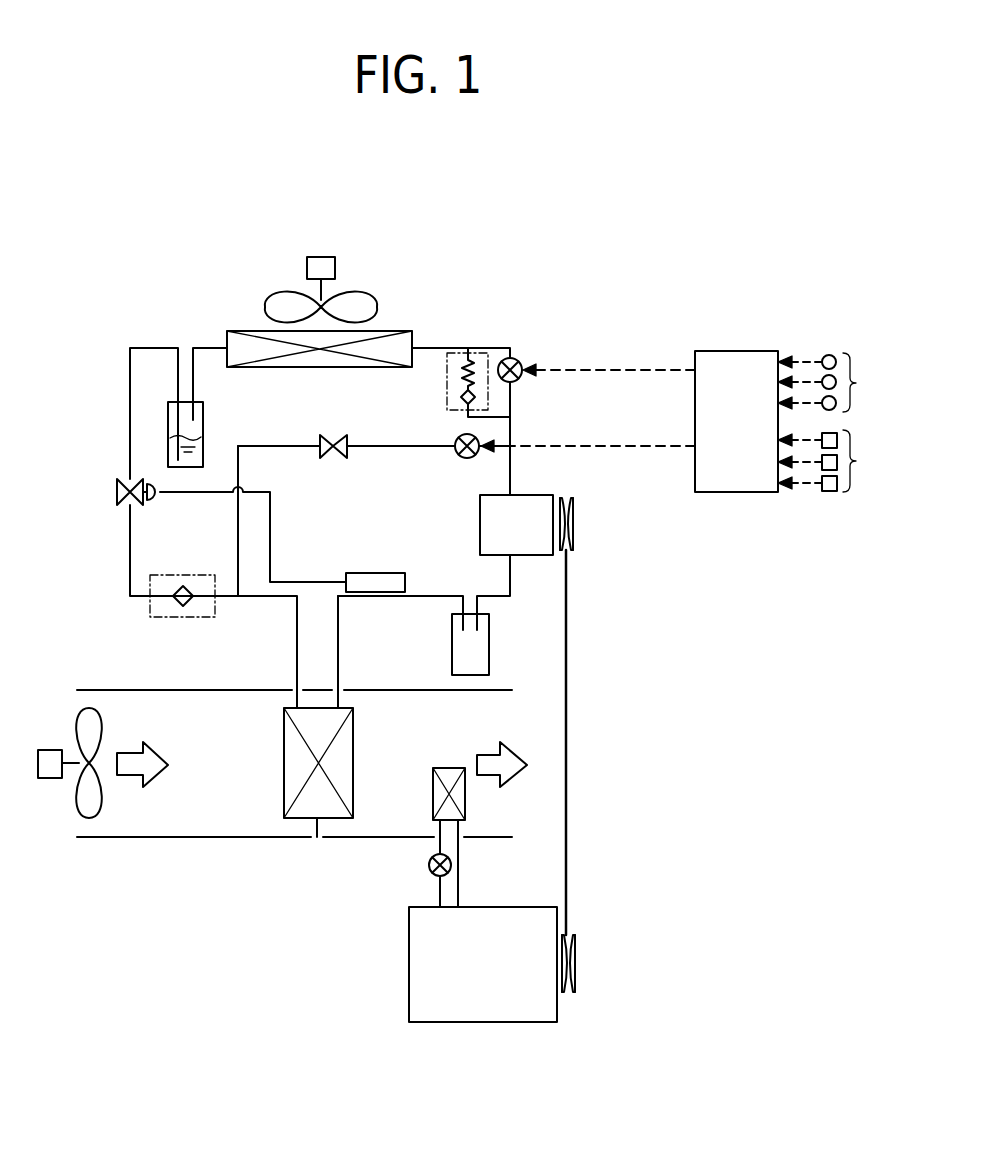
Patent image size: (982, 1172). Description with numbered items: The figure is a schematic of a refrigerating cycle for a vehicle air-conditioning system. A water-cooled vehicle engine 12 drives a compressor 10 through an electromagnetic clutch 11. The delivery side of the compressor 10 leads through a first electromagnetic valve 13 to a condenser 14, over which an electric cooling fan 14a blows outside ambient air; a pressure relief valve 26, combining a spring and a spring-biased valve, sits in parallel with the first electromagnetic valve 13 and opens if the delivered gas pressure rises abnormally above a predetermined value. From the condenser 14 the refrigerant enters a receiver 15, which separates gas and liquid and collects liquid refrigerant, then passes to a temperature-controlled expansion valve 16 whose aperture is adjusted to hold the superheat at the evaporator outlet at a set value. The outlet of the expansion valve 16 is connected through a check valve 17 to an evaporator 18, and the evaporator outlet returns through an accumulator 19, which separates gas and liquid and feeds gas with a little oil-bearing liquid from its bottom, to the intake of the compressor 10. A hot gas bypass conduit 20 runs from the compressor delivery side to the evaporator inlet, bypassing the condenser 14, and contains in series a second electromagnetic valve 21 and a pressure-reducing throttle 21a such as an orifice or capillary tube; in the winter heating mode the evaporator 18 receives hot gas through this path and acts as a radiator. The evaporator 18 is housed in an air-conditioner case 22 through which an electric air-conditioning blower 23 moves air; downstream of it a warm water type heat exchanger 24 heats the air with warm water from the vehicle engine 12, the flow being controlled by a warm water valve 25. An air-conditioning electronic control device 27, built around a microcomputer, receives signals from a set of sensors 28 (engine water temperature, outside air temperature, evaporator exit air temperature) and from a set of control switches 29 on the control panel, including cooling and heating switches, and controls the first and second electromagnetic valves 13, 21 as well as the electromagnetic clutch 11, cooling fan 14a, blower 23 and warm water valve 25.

The compressor 10 is at (480, 528).
The electromagnetic clutch 11 is at (575, 525).
The vehicle engine 12 is at (409, 963).
The first electromagnetic valve 13 is at (514, 357).
The condenser 14 is at (245, 331).
The electric cooling fan 14a is at (270, 296).
The receiver 15 is at (204, 424).
The temperature-controlled expansion valve 16 is at (117, 492).
The check valve 17 is at (183, 620).
The evaporator 18 is at (319, 840).
The accumulator 19 is at (489, 643).
The hot gas bypass conduit 20 is at (236, 541).
The second electromagnetic valve 21 is at (458, 437).
The pressure-reducing throttle 21a is at (333, 459).
The air-conditioner case 22 is at (212, 840).
The electric air-conditioning blower 23 is at (94, 808).
The warm water type heat exchanger 24 is at (449, 767).
The warm water valve 25 is at (429, 865).
The pressure relief valve 26 is at (466, 350).
The air-conditioning electronic control device (ECU) 27 is at (733, 351).
The set of sensors 28 is at (836, 382).
The set of control switches 29 is at (836, 461).